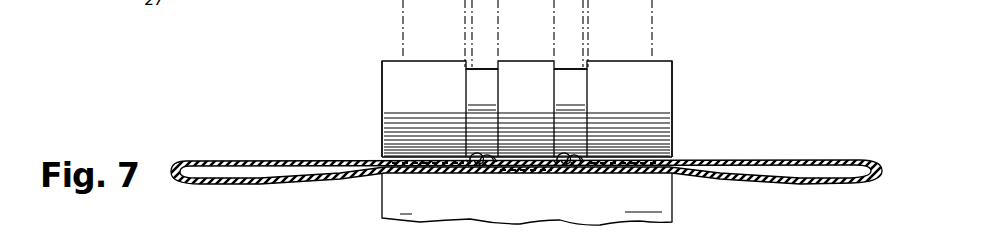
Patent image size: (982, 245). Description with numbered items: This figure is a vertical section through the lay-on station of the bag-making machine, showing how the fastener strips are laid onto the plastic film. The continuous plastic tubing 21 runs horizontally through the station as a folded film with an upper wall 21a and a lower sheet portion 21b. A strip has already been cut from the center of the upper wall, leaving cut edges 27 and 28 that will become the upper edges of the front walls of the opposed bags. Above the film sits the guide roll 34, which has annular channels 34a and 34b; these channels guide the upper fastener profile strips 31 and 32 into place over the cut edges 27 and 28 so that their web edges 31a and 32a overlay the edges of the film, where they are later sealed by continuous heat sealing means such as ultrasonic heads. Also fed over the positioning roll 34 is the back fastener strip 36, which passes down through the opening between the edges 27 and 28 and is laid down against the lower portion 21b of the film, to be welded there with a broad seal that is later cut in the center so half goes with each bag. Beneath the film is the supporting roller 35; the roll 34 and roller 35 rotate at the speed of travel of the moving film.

The plastic tubing 21 is at (513, 172).
The upper layer of tape 21a is at (223, 161).
The lower sheet portion of the film 21b is at (282, 180).
The cut edge 27 is at (451, 172).
The cut edge 28 is at (606, 169).
The upper fastener profile strip 31 is at (466, 152).
The web edge 31a is at (417, 168).
The upper fastener profile strip 32 is at (592, 152).
The web edge 32a is at (634, 170).
The guide roll 34 is at (550, 78).
The annular channel 34a is at (474, 67).
The annular channel 34b is at (571, 67).
The supporting roller 35 is at (673, 207).
The back fastener strip 36 is at (526, 173).